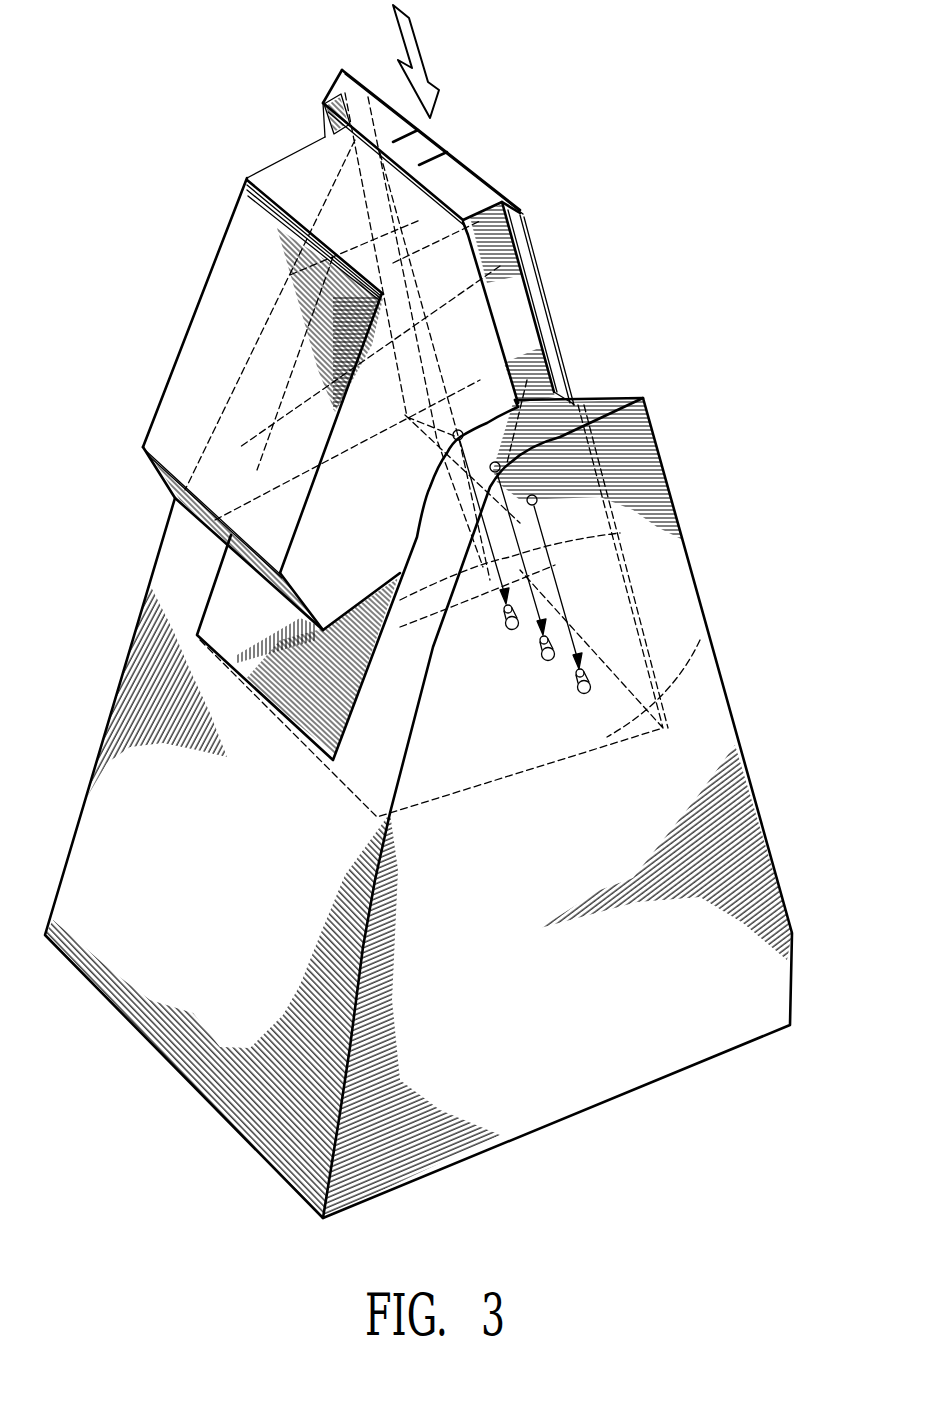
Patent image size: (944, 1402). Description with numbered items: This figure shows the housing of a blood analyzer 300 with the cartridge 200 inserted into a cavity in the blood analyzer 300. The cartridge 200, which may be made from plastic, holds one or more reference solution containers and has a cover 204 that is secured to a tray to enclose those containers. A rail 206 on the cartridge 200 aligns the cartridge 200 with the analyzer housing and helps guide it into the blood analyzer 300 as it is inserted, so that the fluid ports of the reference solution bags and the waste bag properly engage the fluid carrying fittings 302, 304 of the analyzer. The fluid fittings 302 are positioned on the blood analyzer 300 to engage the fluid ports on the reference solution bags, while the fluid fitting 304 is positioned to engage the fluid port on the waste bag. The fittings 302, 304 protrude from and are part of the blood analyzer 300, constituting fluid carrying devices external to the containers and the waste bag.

The cartridge 200 is at (220, 320).
The cover 204 is at (333, 730).
The rail 206 is at (540, 297).
The blood analyzer 300 is at (678, 1060).
The fluid fittings 302 is at (507, 623).
The fluid fitting 304 is at (547, 657).